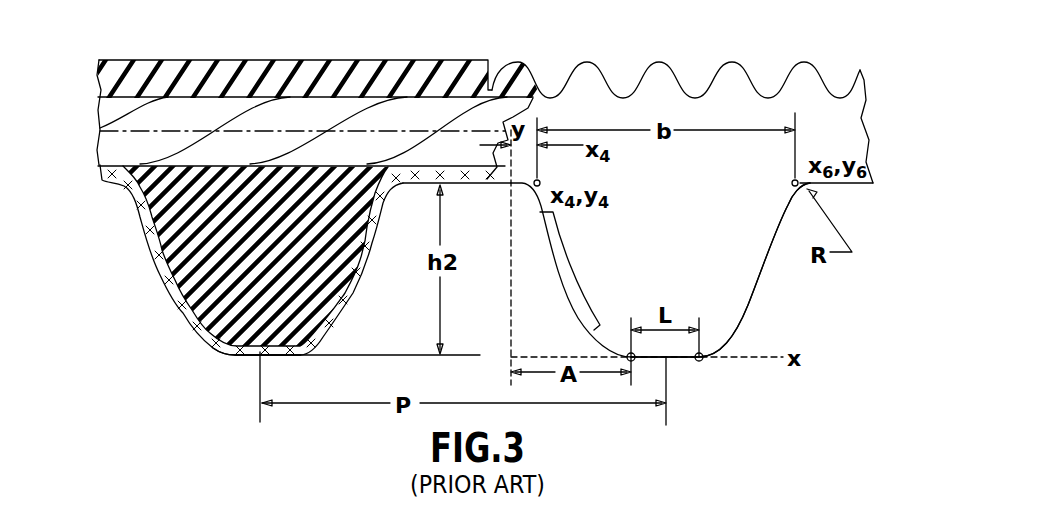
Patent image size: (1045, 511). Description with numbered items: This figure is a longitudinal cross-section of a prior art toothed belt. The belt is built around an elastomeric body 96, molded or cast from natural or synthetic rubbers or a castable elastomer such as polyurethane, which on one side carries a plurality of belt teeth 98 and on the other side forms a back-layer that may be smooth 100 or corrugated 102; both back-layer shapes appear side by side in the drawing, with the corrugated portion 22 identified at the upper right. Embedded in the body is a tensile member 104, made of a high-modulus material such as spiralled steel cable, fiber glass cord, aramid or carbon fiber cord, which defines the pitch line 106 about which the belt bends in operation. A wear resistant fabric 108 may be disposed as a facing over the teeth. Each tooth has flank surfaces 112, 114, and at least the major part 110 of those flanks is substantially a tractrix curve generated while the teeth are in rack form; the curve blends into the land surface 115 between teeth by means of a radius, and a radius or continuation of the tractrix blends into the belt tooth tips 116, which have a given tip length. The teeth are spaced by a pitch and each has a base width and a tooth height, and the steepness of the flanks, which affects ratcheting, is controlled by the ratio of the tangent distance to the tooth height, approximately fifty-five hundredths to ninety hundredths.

The belt back ribs 22 is at (549, 66).
The elastomeric body 96 is at (160, 282).
The belt teeth 98 is at (176, 371).
The smooth back-layer 100 is at (400, 60).
The corrugated back-layer 102 is at (817, 70).
The tensile member 104 is at (177, 120).
The pitch line 106 is at (313, 128).
The wear resistant fabric 108 is at (333, 337).
The major part of flank surfaces 110 is at (573, 259).
The flank surface 112 is at (142, 240).
The flank surface 114 is at (363, 283).
The land surface 115 is at (482, 184).
The belt tooth tips 116 is at (250, 355).